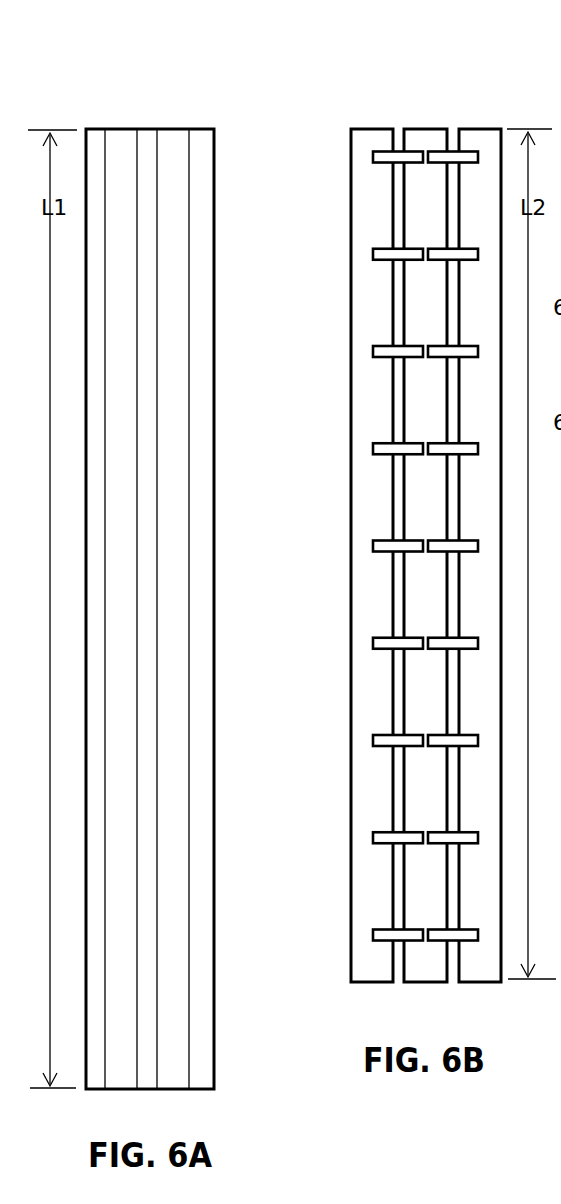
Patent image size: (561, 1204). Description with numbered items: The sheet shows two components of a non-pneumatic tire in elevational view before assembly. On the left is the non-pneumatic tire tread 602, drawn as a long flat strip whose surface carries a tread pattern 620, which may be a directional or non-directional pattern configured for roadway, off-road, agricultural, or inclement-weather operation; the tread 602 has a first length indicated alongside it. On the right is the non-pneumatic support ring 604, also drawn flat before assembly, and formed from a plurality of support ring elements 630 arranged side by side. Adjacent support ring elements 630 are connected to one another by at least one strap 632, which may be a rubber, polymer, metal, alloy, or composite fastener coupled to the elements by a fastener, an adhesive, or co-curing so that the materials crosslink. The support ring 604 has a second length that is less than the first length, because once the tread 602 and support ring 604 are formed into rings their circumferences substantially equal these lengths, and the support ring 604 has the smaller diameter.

In FIG. 6A, the non-pneumatic tire tread 602 is at (127, 103).
In FIG. 6A, the tread pattern 620 is at (178, 199).
In FIG. 6B, the non-pneumatic support ring 604 is at (389, 508).
In FIG. 6B, the support ring elements 630 is at (420, 288).
In FIG. 6B, the strap 632 is at (450, 440).